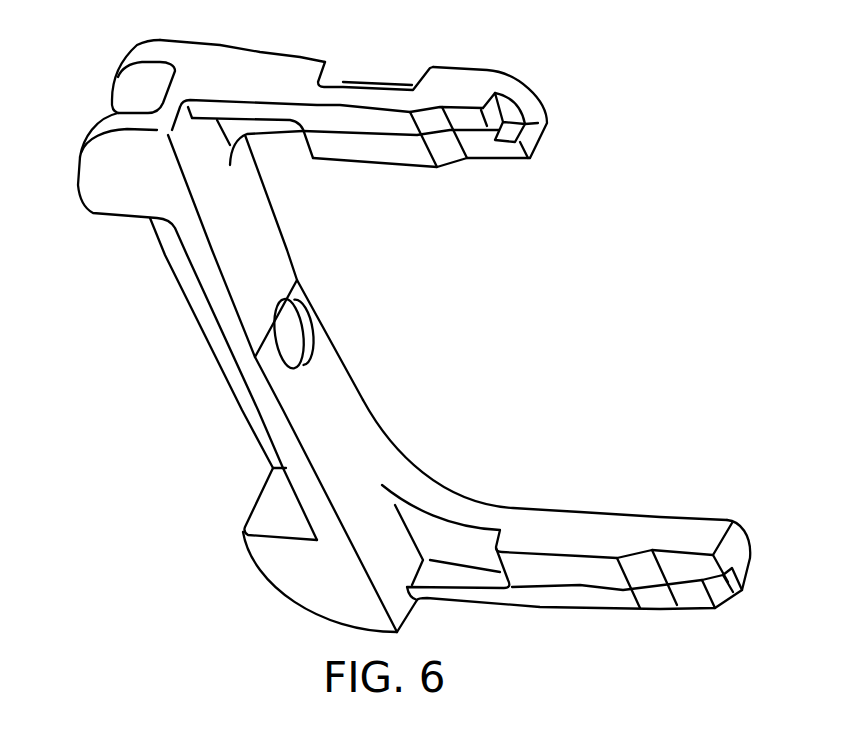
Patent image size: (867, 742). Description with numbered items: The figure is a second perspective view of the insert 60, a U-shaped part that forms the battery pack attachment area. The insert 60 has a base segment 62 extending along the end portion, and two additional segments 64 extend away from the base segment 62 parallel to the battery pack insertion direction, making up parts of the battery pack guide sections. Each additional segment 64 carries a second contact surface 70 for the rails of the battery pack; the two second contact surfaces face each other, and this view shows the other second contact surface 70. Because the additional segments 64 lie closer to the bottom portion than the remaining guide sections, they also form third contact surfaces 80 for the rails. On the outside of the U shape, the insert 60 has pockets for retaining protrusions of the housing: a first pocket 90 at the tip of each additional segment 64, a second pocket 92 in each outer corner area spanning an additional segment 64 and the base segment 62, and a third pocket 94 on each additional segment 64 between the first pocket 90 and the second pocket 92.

The insert 60 is at (524, 320).
The base segment 62 is at (295, 455).
The additional segment 64 is at (268, 88).
The second contact surface 70 is at (608, 527).
The third contact surface 80 is at (400, 157).
The first pocket 90 is at (521, 105).
The second pocket 92 is at (160, 98).
The third pocket 94 is at (403, 85).